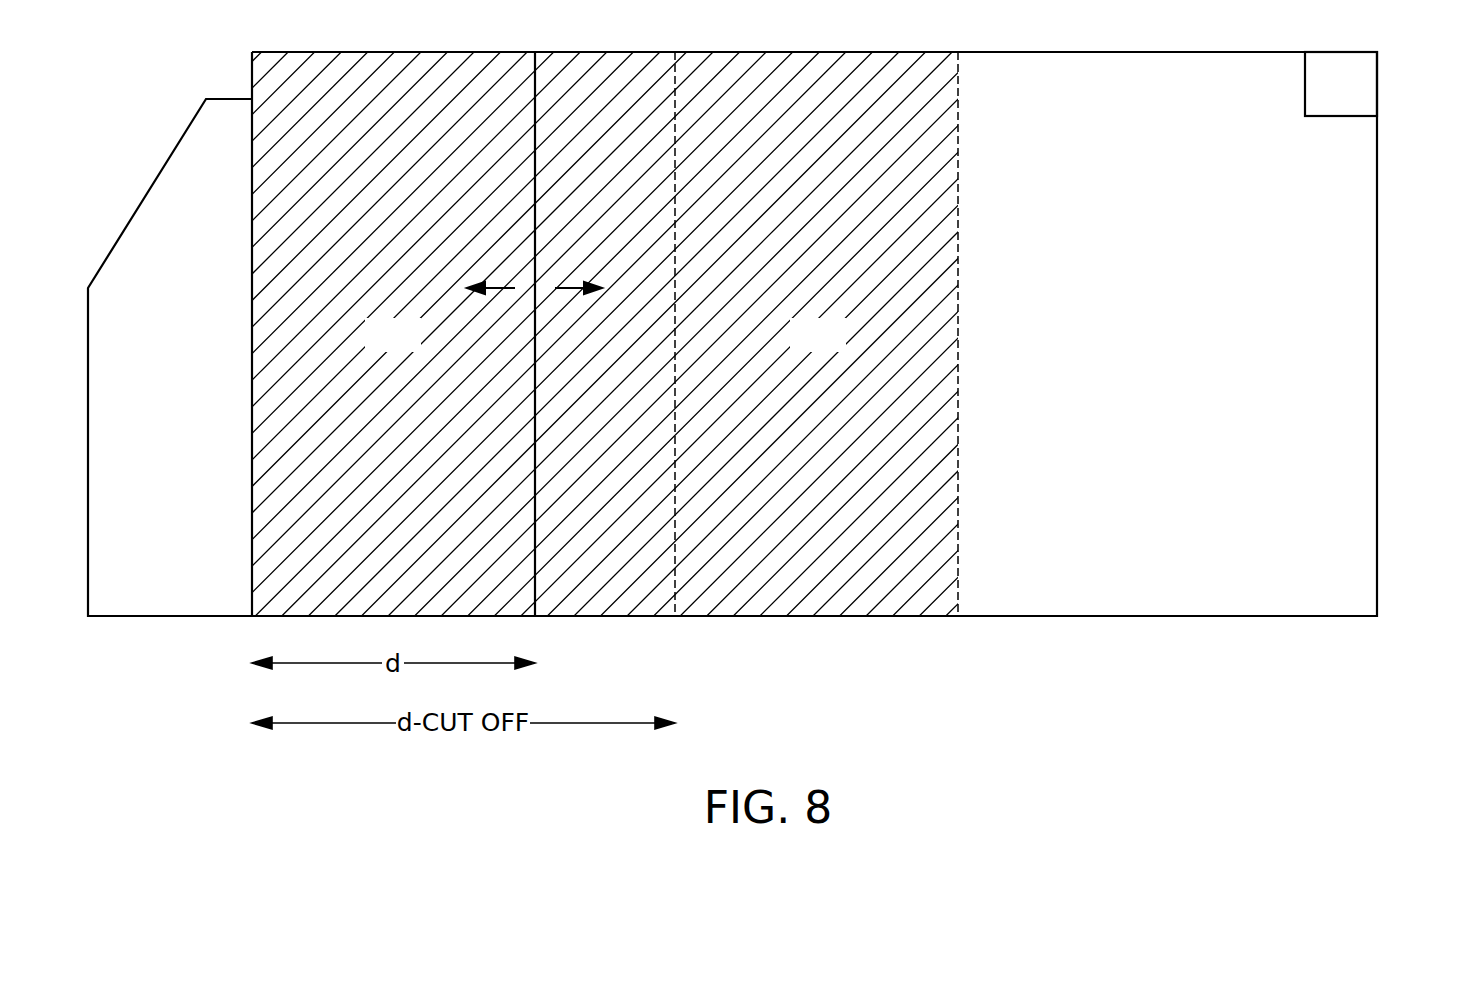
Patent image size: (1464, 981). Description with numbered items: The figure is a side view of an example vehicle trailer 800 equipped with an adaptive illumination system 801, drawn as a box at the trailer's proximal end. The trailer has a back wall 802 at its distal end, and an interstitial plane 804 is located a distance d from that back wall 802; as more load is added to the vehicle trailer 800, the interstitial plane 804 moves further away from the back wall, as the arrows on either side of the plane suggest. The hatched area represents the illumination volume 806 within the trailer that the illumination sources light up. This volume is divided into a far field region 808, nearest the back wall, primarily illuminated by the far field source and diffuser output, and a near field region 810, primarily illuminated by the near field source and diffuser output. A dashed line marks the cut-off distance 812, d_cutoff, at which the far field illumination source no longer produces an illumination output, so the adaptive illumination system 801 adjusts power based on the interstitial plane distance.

The vehicle trailer 800 is at (1377, 333).
The adaptive illumination system 801 is at (1377, 85).
The back wall 802 is at (252, 82).
The interstitial plane 804 is at (534, 90).
The illumination volume 806 is at (960, 333).
The far field region 808 is at (416, 347).
The near field region 810 is at (841, 347).
The cut-off distance 812 is at (677, 88).